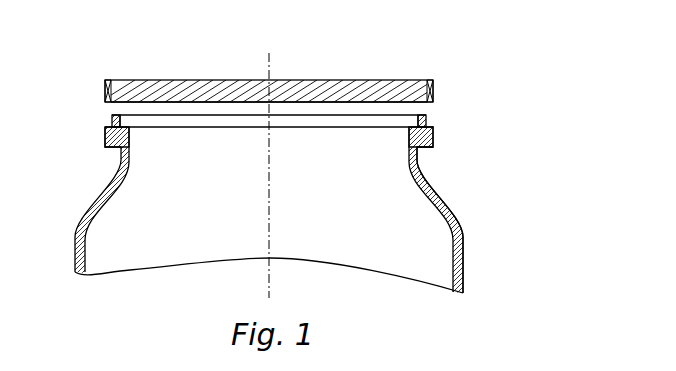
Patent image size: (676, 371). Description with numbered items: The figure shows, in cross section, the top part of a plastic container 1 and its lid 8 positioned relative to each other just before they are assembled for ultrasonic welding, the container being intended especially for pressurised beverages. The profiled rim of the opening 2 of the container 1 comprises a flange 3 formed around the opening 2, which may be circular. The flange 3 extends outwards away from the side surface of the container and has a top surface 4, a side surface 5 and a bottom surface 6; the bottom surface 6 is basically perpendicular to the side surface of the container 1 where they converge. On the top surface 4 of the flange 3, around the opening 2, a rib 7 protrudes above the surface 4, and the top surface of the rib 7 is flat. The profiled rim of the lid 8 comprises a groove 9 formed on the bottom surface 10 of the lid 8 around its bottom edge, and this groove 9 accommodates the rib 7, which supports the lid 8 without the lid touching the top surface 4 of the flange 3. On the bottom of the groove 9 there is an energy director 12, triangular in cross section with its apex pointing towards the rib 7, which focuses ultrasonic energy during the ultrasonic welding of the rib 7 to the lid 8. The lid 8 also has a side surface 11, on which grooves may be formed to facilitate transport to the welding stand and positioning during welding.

The container 1 is at (462, 250).
The opening 2 is at (257, 137).
The flange 3 is at (114, 136).
The top surface 4 is at (434, 125).
The side surface 5 is at (435, 137).
The bottom surface 6 is at (434, 147).
The rib 7 is at (427, 115).
The lid 8 is at (311, 91).
The groove 9 is at (113, 107).
The bottom surface of the lid 10 is at (311, 102).
The side surface of the lid 11 is at (433, 81).
The energy director 12 is at (111, 84).